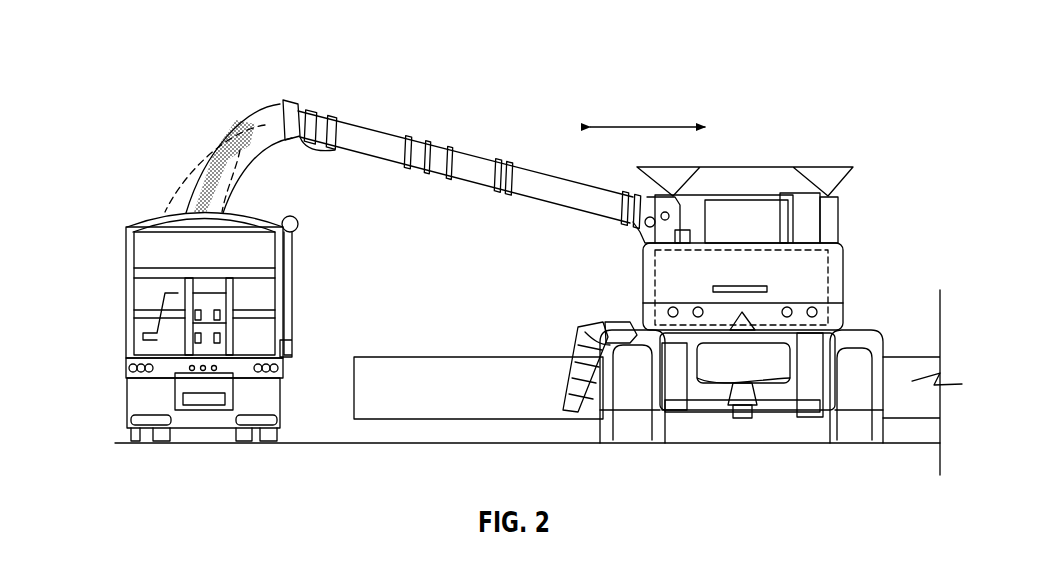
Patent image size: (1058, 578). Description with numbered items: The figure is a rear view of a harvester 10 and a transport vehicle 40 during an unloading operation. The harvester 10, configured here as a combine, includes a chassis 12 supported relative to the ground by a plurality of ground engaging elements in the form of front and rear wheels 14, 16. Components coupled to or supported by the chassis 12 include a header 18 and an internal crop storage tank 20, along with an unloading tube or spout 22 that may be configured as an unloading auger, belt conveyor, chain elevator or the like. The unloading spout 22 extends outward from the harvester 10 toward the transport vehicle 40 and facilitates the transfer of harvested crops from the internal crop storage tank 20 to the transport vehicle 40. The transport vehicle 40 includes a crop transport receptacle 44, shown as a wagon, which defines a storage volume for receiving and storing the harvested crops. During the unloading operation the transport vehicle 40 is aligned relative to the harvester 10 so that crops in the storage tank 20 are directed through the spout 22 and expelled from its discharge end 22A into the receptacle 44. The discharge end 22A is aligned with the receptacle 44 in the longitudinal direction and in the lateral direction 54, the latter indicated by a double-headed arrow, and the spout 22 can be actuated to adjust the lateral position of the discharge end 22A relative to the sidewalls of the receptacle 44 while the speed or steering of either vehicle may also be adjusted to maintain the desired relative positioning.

The harvester 10 is at (858, 138).
The chassis 12 is at (771, 414).
The front wheels 14 is at (604, 323).
The rear wheels 16 is at (630, 416).
The header 18 is at (498, 372).
The internal crop storage tank 20 is at (838, 262).
The unloading spout 22 is at (470, 170).
The discharge end 22A is at (290, 104).
The transport vehicle 40 is at (105, 176).
The crop transport receptacle 44 is at (113, 282).
The lateral direction 54 is at (650, 125).